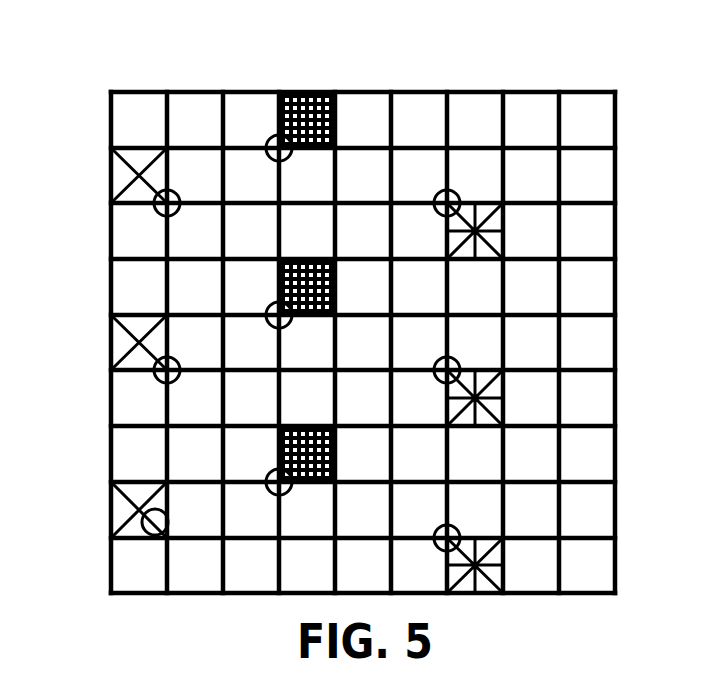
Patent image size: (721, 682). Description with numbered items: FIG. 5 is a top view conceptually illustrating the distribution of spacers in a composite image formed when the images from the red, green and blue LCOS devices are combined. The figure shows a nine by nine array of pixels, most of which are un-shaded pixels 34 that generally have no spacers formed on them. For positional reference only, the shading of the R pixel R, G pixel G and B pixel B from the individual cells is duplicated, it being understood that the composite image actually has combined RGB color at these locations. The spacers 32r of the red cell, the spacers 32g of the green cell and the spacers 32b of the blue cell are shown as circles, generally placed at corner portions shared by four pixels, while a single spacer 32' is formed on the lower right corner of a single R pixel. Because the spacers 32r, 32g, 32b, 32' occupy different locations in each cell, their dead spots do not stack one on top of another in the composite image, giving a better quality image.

The pixel 34 is at (600, 173).
The R pixel R is at (118, 343).
The G pixel G is at (315, 90).
The B pixel B is at (500, 388).
The spacers 32r is at (153, 210).
The spacers 32g is at (270, 488).
The spacers 32b is at (462, 358).
The single spacer 32' is at (103, 541).